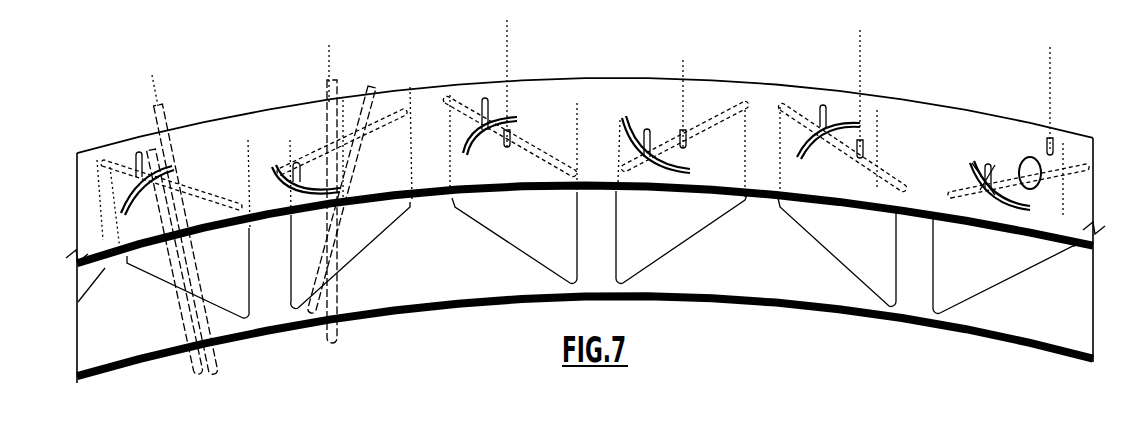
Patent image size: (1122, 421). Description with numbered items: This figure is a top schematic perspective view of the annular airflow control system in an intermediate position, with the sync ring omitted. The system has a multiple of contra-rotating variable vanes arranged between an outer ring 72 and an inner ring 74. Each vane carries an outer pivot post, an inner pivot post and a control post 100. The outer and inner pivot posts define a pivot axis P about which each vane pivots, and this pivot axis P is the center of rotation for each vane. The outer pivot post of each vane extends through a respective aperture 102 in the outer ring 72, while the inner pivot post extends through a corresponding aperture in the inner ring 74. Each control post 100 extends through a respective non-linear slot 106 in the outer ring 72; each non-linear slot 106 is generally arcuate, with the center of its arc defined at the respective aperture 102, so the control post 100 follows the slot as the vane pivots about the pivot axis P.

The outer ring 72 is at (390, 86).
The inner ring 74 is at (490, 300).
The control post 100 is at (478, 99).
The aperture 102 is at (1020, 160).
The non-linear slot 106 is at (525, 120).
The pivot axis P is at (151, 74).